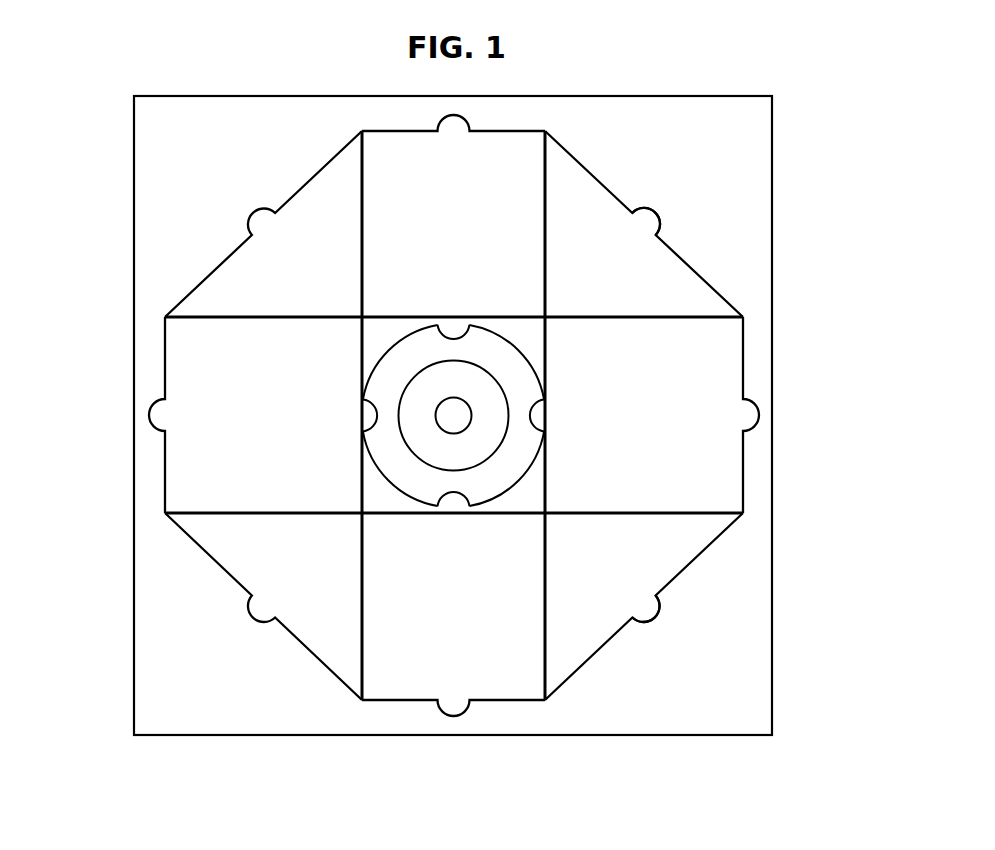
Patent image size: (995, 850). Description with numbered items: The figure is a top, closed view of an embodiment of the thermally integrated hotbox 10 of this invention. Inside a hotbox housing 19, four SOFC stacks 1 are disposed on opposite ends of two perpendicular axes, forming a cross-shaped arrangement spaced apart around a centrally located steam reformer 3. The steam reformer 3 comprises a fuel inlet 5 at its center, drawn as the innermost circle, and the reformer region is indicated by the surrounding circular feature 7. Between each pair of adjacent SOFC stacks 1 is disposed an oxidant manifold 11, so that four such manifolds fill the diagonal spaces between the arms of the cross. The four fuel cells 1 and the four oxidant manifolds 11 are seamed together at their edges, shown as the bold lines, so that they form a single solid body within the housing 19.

The SOFC stack 1 is at (743, 477).
The steam reformer 3 is at (425, 463).
The fuel inlet 5 is at (447, 411).
The circular recess 7 is at (405, 335).
The thermally integrated hotbox 10 is at (637, 75).
The oxidant manifold 11 is at (673, 245).
The hotbox housing 19 is at (776, 290).